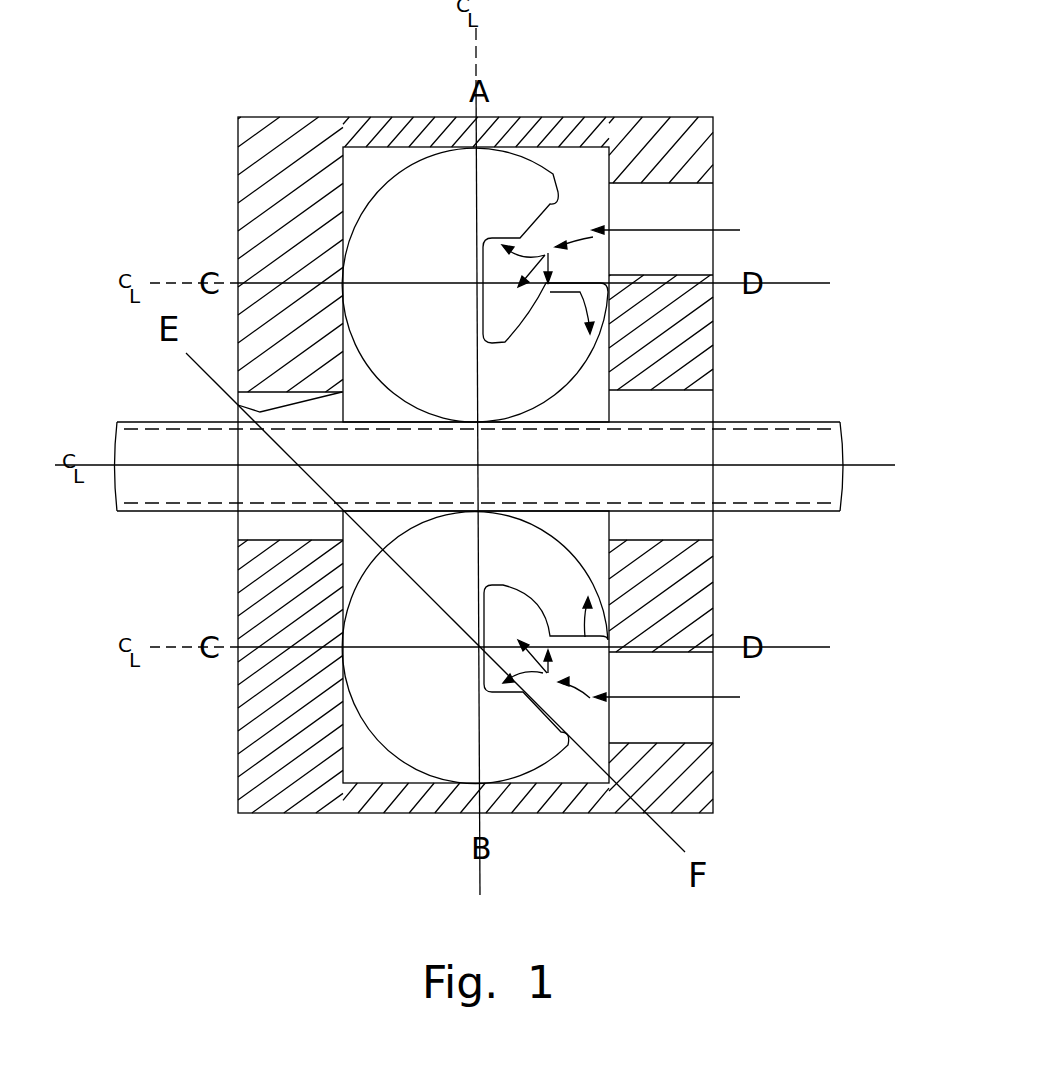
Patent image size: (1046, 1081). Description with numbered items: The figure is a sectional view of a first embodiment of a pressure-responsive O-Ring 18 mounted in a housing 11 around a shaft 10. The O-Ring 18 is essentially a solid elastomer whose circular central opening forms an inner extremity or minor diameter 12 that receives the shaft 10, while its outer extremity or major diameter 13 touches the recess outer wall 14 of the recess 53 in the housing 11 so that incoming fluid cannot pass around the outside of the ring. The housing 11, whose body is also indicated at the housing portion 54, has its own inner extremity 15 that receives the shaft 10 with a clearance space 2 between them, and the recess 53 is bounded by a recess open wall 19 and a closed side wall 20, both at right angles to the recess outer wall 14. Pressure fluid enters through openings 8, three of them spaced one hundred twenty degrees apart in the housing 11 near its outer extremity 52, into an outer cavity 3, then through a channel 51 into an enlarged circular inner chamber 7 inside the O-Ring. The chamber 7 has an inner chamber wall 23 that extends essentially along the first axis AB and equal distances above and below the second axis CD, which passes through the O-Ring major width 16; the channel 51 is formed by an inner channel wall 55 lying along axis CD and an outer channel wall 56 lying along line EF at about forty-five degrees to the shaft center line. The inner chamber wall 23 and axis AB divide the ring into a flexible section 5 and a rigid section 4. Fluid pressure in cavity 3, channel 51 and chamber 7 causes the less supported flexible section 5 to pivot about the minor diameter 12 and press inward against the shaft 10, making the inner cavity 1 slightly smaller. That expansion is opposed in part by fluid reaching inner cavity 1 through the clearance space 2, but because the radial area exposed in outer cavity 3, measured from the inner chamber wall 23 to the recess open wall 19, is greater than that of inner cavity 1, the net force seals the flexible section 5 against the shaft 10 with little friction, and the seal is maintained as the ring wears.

The inner cavity 1 is at (578, 415).
The clearance space 2 is at (690, 415).
The outer cavity 3 is at (604, 218).
The rigid section 4 is at (358, 213).
The flexible section 5 is at (572, 313).
The inner chamber 7 is at (523, 284).
The openings 8 is at (690, 222).
The shaft 10 is at (556, 493).
The housing 11 is at (690, 168).
The minor diameter 12 is at (478, 420).
The major diameter 13 is at (478, 146).
The recess outer wall 14 is at (375, 148).
The housing inner extremity 15 is at (238, 405).
The O-Ring major width 16 is at (345, 647).
The O-Ring 18 is at (430, 272).
The recess open wall 19 is at (603, 358).
The closed side wall 20 is at (343, 355).
The inner chamber wall 23 is at (480, 302).
The channel 51 is at (604, 265).
The housing outer extremity 52 is at (653, 115).
The recess 53 is at (385, 532).
The housing edge 54 is at (353, 168).
The inner channel wall 55 is at (583, 283).
The outer channel wall 56 is at (550, 203).